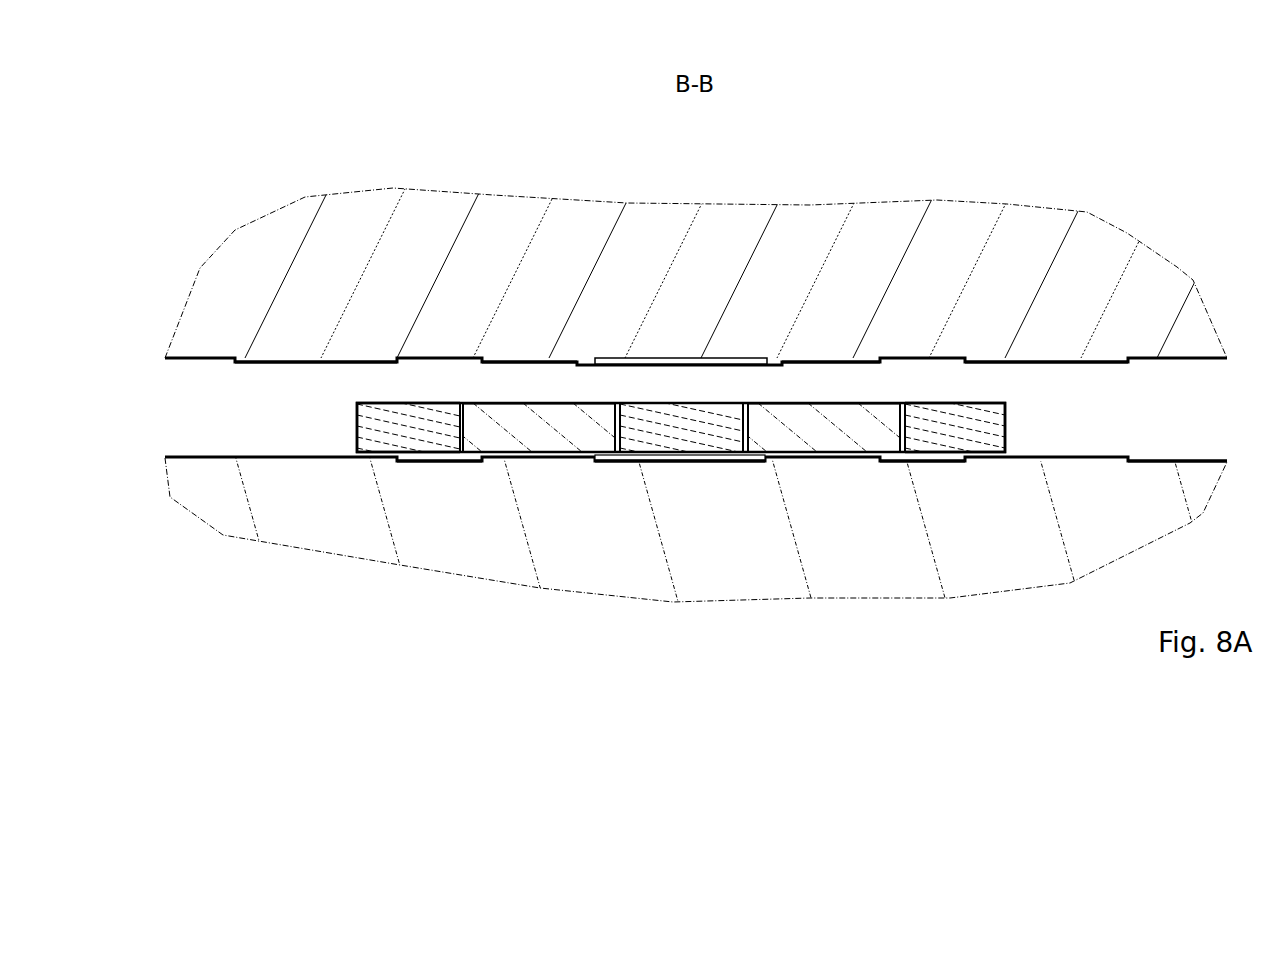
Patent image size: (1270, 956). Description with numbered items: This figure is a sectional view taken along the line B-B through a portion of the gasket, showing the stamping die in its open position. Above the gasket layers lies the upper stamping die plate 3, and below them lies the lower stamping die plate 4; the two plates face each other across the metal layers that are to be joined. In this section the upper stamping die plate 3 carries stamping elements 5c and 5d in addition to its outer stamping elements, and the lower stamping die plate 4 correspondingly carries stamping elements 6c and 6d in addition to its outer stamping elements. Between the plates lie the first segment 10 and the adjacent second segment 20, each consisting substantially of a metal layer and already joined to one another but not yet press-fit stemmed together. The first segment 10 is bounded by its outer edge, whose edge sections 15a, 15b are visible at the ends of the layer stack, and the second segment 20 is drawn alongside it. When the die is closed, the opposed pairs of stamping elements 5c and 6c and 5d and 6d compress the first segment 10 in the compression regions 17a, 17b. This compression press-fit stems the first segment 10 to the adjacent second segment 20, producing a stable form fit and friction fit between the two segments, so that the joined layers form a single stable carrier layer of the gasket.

The upper stamping die plate 3 is at (1013, 222).
The lower stamping die plate 4 is at (995, 585).
The stamping element 5c is at (537, 357).
The stamping element 5d is at (837, 357).
The stamping element 6c is at (560, 465).
The stamping element 6d is at (823, 467).
The first segment 10 is at (540, 418).
The edge section 15a is at (1005, 443).
The edge section 15b is at (357, 435).
The compression region 17a is at (527, 427).
The compression region 17b is at (812, 427).
The second segment 20 is at (375, 420).